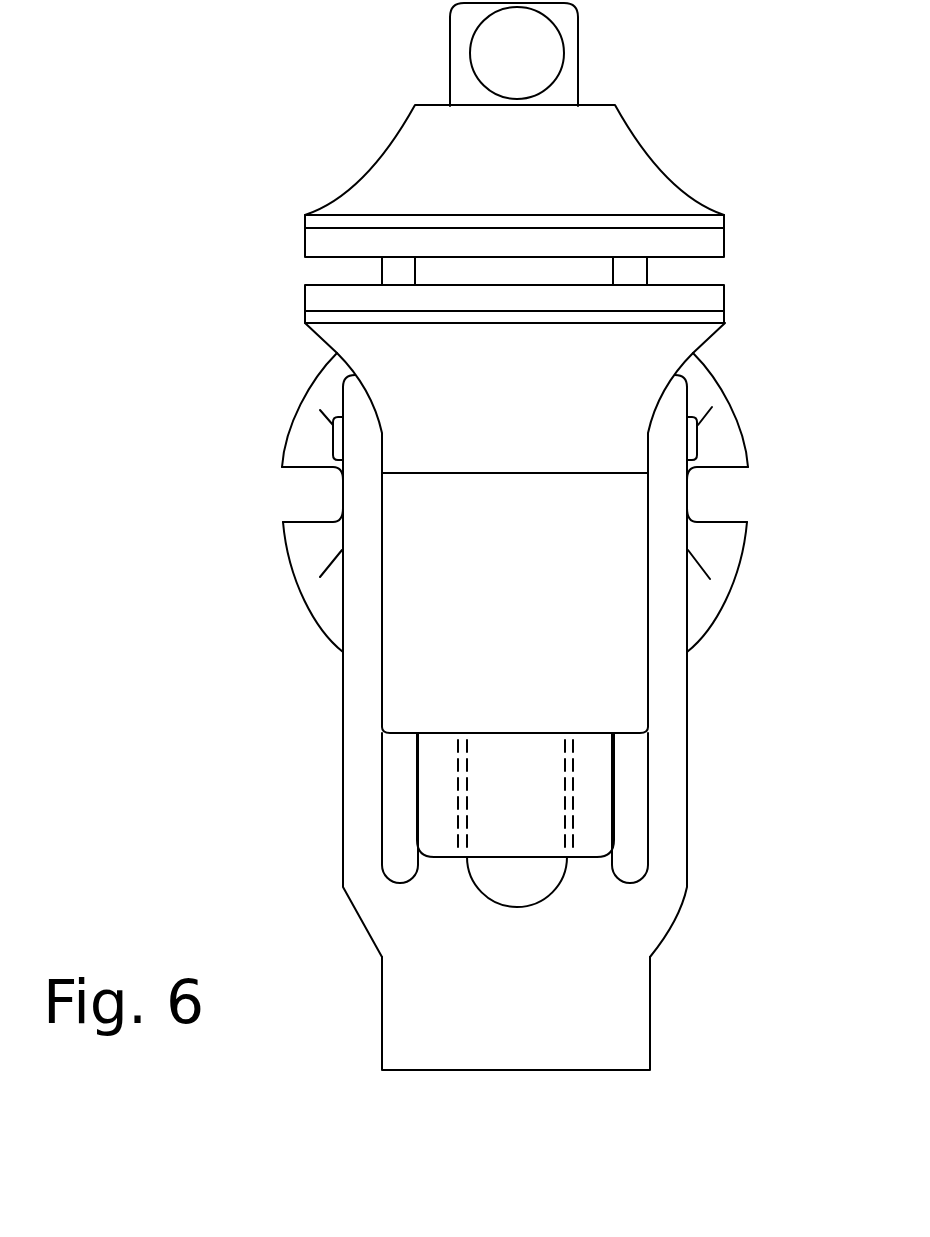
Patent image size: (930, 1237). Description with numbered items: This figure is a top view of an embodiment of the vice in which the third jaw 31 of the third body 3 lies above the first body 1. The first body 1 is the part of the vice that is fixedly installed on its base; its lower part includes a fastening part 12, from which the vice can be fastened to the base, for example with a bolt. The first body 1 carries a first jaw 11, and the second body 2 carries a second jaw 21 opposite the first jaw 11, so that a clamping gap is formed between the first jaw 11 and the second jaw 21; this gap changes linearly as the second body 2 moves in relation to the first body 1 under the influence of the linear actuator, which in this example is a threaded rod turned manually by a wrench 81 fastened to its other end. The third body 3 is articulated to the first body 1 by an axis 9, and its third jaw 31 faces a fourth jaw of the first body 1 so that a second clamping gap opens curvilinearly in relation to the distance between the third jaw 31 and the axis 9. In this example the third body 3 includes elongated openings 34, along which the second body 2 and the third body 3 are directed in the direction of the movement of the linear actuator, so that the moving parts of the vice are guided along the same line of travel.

The first body 1 is at (622, 680).
The second body 2 is at (582, 165).
The second jaw 21 is at (710, 240).
The first jaw 11 is at (708, 303).
The fastening part 12 is at (307, 543).
The axis 9 is at (690, 433).
The elongated openings 34 is at (633, 783).
The third body 3 is at (587, 915).
The third jaw 31 is at (600, 1043).
The wrench 81 is at (518, 53).